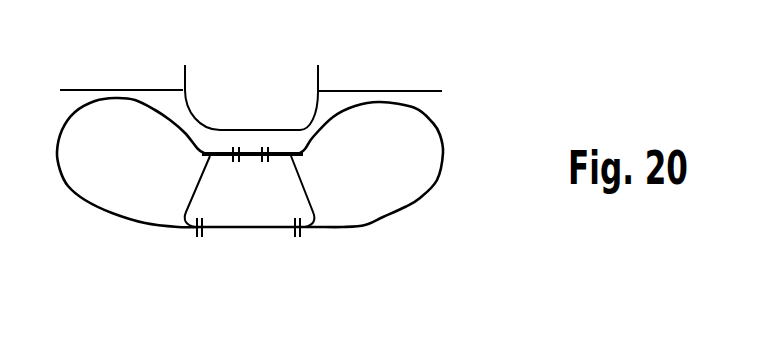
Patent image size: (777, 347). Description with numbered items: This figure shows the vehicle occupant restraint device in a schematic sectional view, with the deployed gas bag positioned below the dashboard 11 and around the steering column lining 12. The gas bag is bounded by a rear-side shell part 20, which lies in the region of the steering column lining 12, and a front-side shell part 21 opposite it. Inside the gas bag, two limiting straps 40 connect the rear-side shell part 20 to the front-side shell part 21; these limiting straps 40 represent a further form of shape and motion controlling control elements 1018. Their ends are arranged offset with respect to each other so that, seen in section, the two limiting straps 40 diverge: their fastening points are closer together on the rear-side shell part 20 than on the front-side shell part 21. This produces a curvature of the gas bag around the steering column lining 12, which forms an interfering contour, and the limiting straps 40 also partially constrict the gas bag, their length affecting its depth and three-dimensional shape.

The dashboard 11 is at (103, 90).
The steering column lining 12 is at (271, 105).
The rear-side shell part 20 is at (348, 99).
The front-side shell part 21 is at (342, 229).
The limiting straps 40 is at (298, 173).
The control elements 1018 is at (197, 190).